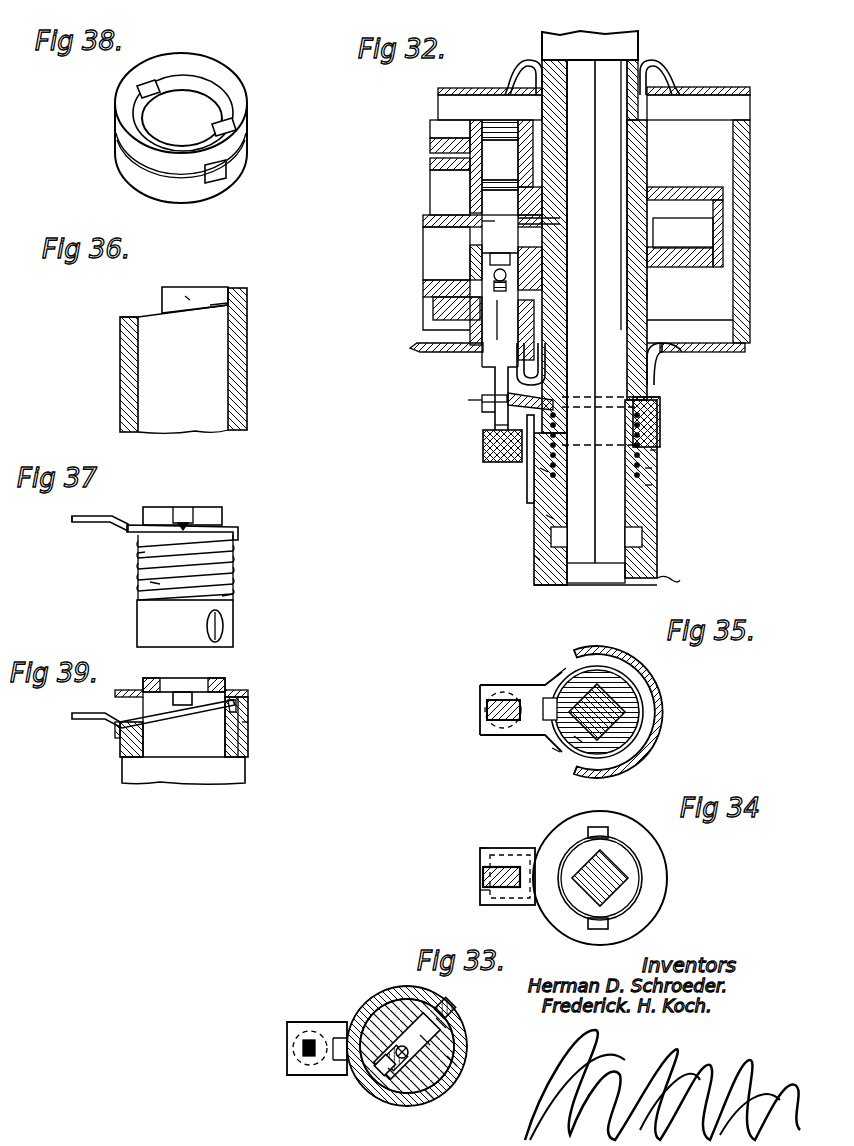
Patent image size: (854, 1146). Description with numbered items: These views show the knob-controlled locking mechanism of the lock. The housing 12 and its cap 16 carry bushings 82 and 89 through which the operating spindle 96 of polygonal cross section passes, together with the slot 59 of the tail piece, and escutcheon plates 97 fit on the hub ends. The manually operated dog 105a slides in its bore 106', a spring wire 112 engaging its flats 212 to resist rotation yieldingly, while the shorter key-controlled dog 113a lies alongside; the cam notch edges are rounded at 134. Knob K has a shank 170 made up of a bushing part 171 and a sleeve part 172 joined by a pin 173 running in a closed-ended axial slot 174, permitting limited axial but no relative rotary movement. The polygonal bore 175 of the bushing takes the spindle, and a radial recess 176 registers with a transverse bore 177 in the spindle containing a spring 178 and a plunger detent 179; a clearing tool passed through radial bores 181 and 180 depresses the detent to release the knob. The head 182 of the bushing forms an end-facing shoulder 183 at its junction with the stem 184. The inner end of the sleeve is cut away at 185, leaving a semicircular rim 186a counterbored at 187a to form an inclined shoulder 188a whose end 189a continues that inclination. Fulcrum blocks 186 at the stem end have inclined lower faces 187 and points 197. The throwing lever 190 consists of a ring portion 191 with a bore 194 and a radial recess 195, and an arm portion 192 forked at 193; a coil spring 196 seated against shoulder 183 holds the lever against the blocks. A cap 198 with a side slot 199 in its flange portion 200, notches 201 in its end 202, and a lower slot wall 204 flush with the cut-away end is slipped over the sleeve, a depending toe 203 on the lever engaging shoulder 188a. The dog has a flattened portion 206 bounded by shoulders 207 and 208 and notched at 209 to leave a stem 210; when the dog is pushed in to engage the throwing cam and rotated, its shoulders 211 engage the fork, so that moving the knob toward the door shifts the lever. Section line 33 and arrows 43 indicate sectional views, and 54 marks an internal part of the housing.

In FIG. 32, the housing 12 is at (695, 190).
In FIG. 32, the cap 16 is at (693, 265).
In FIG. 32, the section line 33 is at (471, 398).
In FIG. 32, the passage 43 is at (503, 224).
In FIG. 32, the chamber 54 is at (662, 226).
In FIG. 32, the slot 59 is at (548, 221).
In FIG. 32, the bushing 82 is at (623, 160).
In FIG. 32, the bushing 89 is at (630, 290).
In FIG. 32, the operating spindle 96 is at (588, 550).
In FIG. 35, the operating spindle 96 is at (632, 703).
In FIG. 34, the operating spindle 96 is at (612, 876).
In FIG. 33, the operating spindle 96 is at (452, 1062).
In FIG. 32, the escutcheon plate 97 is at (718, 92).
In FIG. 32, the inside dog 105a is at (440, 320).
In FIG. 32, the bore 106' is at (463, 216).
In FIG. 32, the spring wire 112 is at (480, 248).
In FIG. 32, the key-controlled dog 113a is at (492, 162).
In FIG. 32, the bevelled edge 134 is at (520, 246).
In FIG. 32, the shank 170 is at (529, 563).
In FIG. 32, the bushing part 171 is at (655, 455).
In FIG. 37, the bushing part 171 is at (155, 585).
In FIG. 39, the bushing part 171 is at (155, 765).
In FIG. 33, the bushing part 171 is at (385, 1017).
In FIG. 32, the sleeve part 172 is at (655, 537).
In FIG. 36, the sleeve part 172 is at (237, 373).
In FIG. 39, the sleeve part 172 is at (246, 752).
In FIG. 33, the sleeve part 172 is at (455, 1046).
In FIG. 33, the set screw or pin 173 is at (442, 1010).
In FIG. 37, the axial slot 174 is at (220, 623).
In FIG. 33, the axial slot 174 is at (442, 1024).
In FIG. 32, the bore 175 is at (650, 485).
In FIG. 35, the bore 175 is at (645, 716).
In FIG. 33, the radial recess 176 is at (410, 1085).
In FIG. 33, the transverse bore 177 is at (430, 1100).
In FIG. 33, the spring 178 is at (428, 1040).
In FIG. 33, the plunger detent 179 is at (385, 1065).
In FIG. 33, the radial bore 180 is at (402, 1068).
In FIG. 33, the radial bore 181 is at (392, 1072).
In FIG. 32, the head 182 is at (550, 517).
In FIG. 37, the head 182 is at (145, 620).
In FIG. 32, the shoulder 183 is at (650, 470).
In FIG. 37, the shoulder 183 is at (225, 595).
In FIG. 32, the stem portion 184 is at (655, 440).
In FIG. 37, the stem portion 184 is at (218, 555).
In FIG. 35, the stem portion 184 is at (578, 740).
In FIG. 36, the cut-away 185 is at (145, 313).
In FIG. 37, the fulcrum blocks 186 is at (183, 514).
In FIG. 39, the fulcrum blocks 186 is at (185, 688).
In FIG. 34, the fulcrum blocks 186 is at (600, 830).
In FIG. 36, the rim 186a is at (212, 293).
In FIG. 37, the lower faces 187 is at (195, 528).
In FIG. 39, the lower faces 187 is at (182, 707).
In FIG. 36, the counterbore 187a is at (187, 297).
In FIG. 36, the shoulder 188a is at (215, 305).
In FIG. 39, the shoulder 188a is at (248, 727).
In FIG. 36, the end of cut-away 189a is at (125, 318).
In FIG. 32, the throwing lever 190 is at (458, 398).
In FIG. 37, the throwing lever 190 is at (113, 519).
In FIG. 39, the throwing lever 190 is at (66, 720).
In FIG. 35, the throwing lever 190 is at (521, 746).
In FIG. 34, the throwing lever 190 is at (478, 856).
In FIG. 33, the throwing lever 190 is at (280, 1023).
In FIG. 35, the ring portion 191 is at (573, 670).
In FIG. 35, the arm portion 192 is at (528, 690).
In FIG. 34, the arm portion 192 is at (522, 850).
In FIG. 33, the arm portion 192 is at (333, 1030).
In FIG. 37, the fork 193 is at (75, 522).
In FIG. 35, the fork 193 is at (490, 700).
In FIG. 34, the fork 193 is at (485, 893).
In FIG. 33, the fork 193 is at (300, 1043).
In FIG. 35, the bore 194 is at (555, 750).
In FIG. 35, the radial recess 195 is at (503, 726).
In FIG. 32, the coil spring 196 is at (543, 470).
In FIG. 37, the coil spring 196 is at (140, 557).
In FIG. 37, the points 197 is at (195, 525).
In FIG. 32, the cap 198 is at (662, 418).
In FIG. 38, the cap 198 is at (243, 97).
In FIG. 39, the cap 198 is at (248, 712).
In FIG. 35, the cap 198 is at (660, 742).
In FIG. 34, the cap 198 is at (655, 893).
In FIG. 38, the side slot 199 is at (135, 163).
In FIG. 35, the side slot 199 is at (565, 770).
In FIG. 38, the flange portion 200 is at (238, 165).
In FIG. 38, the notches 201 is at (152, 84).
In FIG. 38, the cap end 202 is at (213, 77).
In FIG. 39, the cap end 202 is at (135, 690).
In FIG. 32, the toe 203 is at (655, 405).
In FIG. 37, the toe 203 is at (240, 533).
In FIG. 39, the toe 203 is at (240, 703).
In FIG. 32, the lower wall of slot 204 is at (505, 445).
In FIG. 38, the lower wall of slot 204 is at (145, 185).
In FIG. 32, the flattened portion 206 is at (520, 375).
In FIG. 35, the flattened portion 206 is at (487, 710).
In FIG. 34, the flattened portion 206 is at (483, 877).
In FIG. 32, the shoulder 207 is at (460, 352).
In FIG. 32, the shoulder 208 is at (505, 432).
In FIG. 32, the notch 209 is at (520, 398).
In FIG. 33, the stem 210 is at (310, 1050).
In FIG. 32, the shoulders 211 is at (480, 395).
In FIG. 32, the flats 212 is at (475, 265).
In FIG. 32, the knob K is at (675, 577).